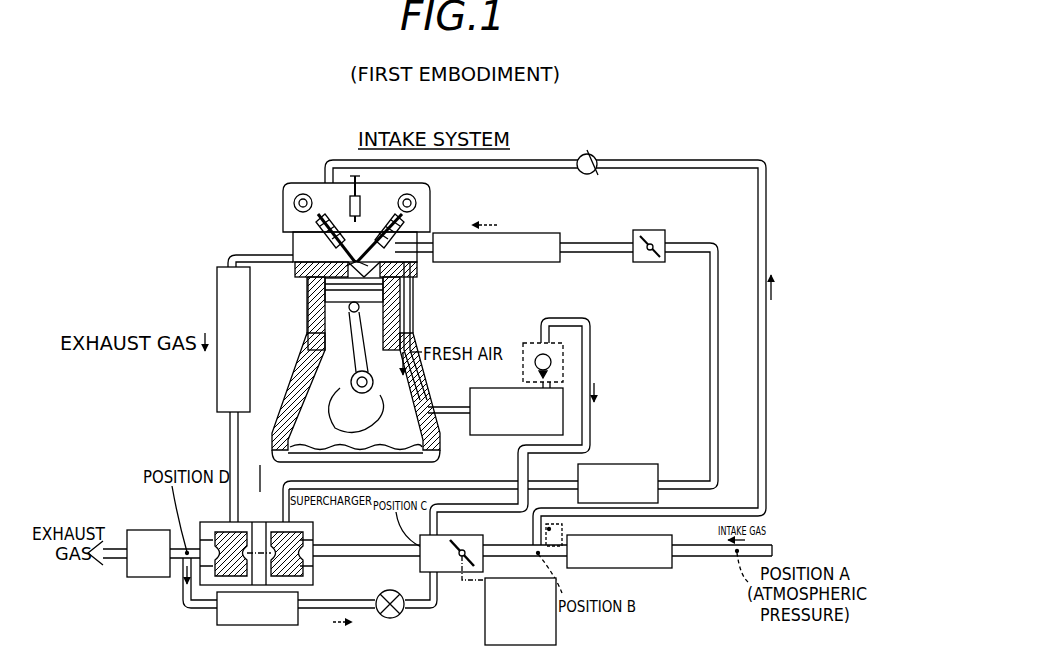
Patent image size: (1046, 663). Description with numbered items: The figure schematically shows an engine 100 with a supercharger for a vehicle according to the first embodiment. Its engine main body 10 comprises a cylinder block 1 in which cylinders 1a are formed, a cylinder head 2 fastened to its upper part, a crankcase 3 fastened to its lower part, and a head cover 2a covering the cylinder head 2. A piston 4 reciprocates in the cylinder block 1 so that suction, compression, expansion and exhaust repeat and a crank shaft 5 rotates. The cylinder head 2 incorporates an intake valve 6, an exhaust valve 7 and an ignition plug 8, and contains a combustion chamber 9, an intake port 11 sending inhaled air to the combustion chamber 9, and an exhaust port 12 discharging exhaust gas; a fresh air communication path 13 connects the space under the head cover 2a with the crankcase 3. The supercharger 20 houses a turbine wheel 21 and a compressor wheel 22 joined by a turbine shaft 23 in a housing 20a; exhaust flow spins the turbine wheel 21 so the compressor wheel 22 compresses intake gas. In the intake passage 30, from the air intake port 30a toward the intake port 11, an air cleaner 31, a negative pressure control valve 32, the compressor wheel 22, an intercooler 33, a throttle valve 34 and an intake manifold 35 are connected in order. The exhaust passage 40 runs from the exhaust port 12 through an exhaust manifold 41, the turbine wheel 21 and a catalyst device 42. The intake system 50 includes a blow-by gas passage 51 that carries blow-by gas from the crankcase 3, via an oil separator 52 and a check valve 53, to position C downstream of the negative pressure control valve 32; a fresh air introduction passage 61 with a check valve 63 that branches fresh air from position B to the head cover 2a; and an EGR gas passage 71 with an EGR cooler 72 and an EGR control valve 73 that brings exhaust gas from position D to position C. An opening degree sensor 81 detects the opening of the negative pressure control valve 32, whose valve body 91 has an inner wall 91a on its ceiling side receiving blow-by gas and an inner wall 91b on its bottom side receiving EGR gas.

The engine 100 is at (171, 178).
The engine main body 10 is at (243, 206).
The cylinder block 1 is at (303, 350).
The cylinder 1a is at (312, 305).
The cylinder head 2 is at (428, 285).
The head cover 2a is at (284, 198).
The crankcase 3 is at (440, 454).
The piston 4 is at (296, 372).
The crank shaft 5 is at (345, 385).
The intake valve 6 is at (394, 209).
The exhaust valve 7 is at (312, 193).
The ignition plug 8 is at (351, 208).
The combustion chamber 9 is at (318, 287).
The intake port 11 is at (425, 270).
The exhaust port 12 is at (292, 250).
The fresh air communication path 13 is at (417, 333).
The supercharger 20 is at (280, 514).
The housing 20a is at (313, 578).
The turbine wheel 21 is at (234, 532).
The compressor wheel 22 is at (282, 532).
The turbine shaft 23 is at (258, 550).
The intake passage 30 is at (706, 243).
The air intake port 30a is at (765, 551).
The air cleaner 31 is at (674, 540).
The negative pressure control valve 32 is at (486, 547).
The intercooler 33 is at (660, 479).
The throttle valve 34 is at (661, 232).
The intake manifold 35 is at (528, 232).
The exhaust passage 40 is at (208, 446).
The exhaust manifold 41 is at (217, 292).
The catalyst device 42 is at (140, 529).
The intake system 50 is at (776, 247).
The blow-by gas passage 51 is at (592, 360).
The oil separator 52 is at (489, 390).
The check valve 53 is at (533, 343).
The fresh air introduction passage 61 is at (770, 381).
The check valve 63 is at (593, 176).
The EGR gas passage 71 is at (180, 596).
The EGR cooler 72 is at (300, 603).
The EGR control valve 73 is at (391, 590).
The opening degree sensor 81 is at (485, 612).
The valve body 91 is at (474, 562).
The inner wall 91a is at (455, 541).
The inner wall 91b is at (463, 571).